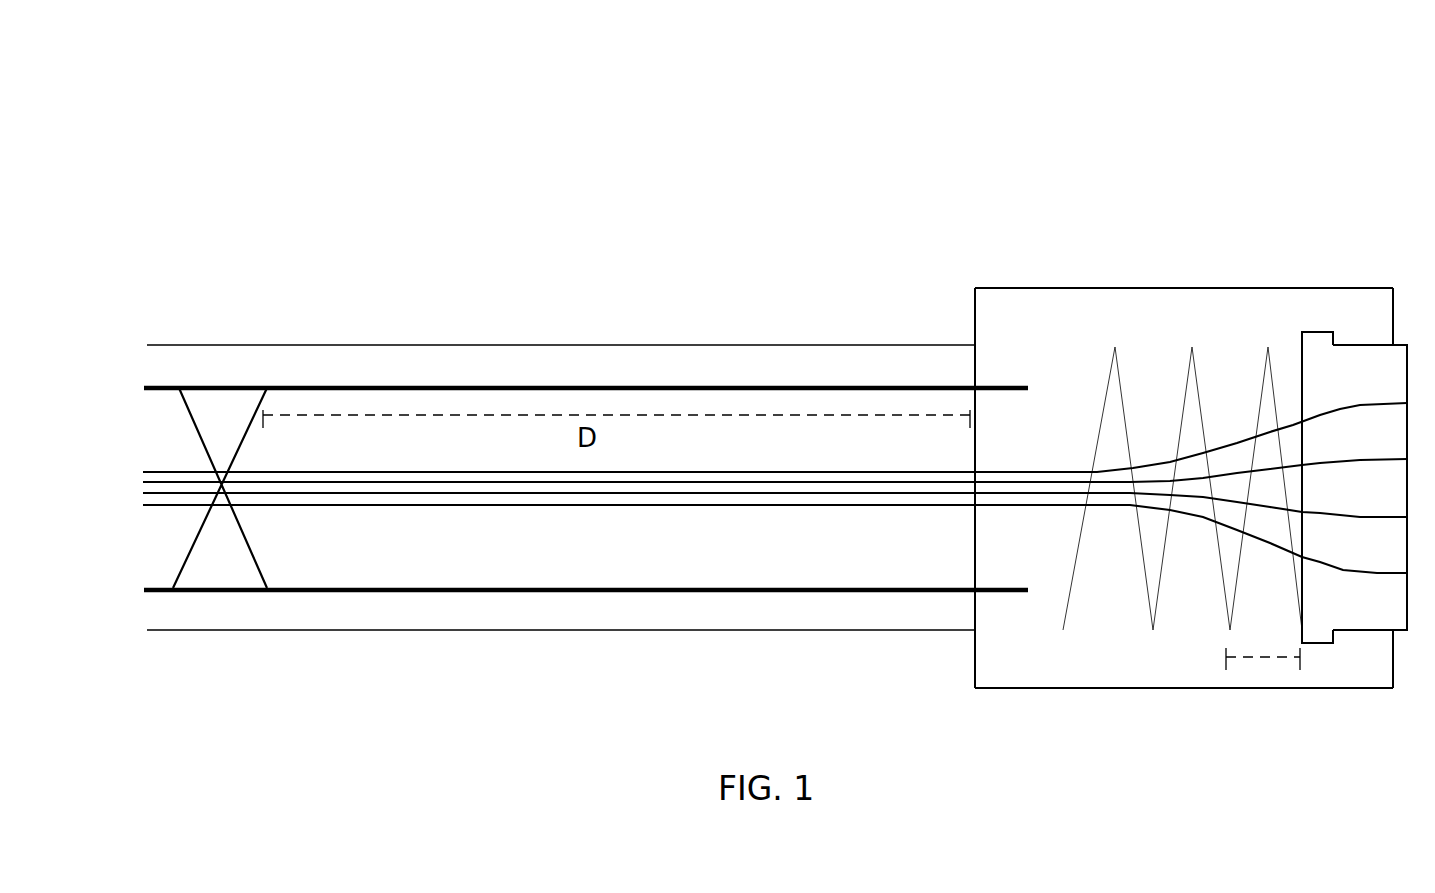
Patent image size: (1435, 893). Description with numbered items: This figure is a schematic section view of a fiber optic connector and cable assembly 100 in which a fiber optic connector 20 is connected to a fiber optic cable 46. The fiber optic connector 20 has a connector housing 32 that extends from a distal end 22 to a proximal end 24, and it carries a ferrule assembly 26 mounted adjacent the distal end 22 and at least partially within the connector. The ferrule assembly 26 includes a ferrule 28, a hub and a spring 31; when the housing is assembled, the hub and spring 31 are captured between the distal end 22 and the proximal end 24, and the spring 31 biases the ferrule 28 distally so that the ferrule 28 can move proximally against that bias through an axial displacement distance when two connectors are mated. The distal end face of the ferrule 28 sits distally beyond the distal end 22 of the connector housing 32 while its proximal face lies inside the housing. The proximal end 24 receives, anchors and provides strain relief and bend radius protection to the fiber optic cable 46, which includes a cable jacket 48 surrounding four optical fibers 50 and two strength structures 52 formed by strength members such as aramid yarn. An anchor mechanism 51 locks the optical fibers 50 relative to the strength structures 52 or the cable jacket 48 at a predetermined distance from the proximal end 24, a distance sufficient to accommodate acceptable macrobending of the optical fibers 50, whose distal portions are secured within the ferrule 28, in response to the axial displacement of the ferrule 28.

The fiber optic connector and cable assembly 100 is at (813, 130).
The fiber optic connector 20 is at (1156, 216).
The distal end 22 is at (1383, 238).
The proximal end 24 is at (963, 250).
The ferrule assembly 26 is at (1287, 300).
The ferrule 28 is at (1373, 630).
The spring 31 is at (1225, 593).
The connector housing 32 is at (1103, 288).
The fiber optic cable 46 is at (346, 275).
The cable jacket 48 is at (503, 345).
The optical fiber 50 is at (415, 507).
The anchor mechanism 51 is at (245, 543).
The strength structure 52 is at (668, 388).